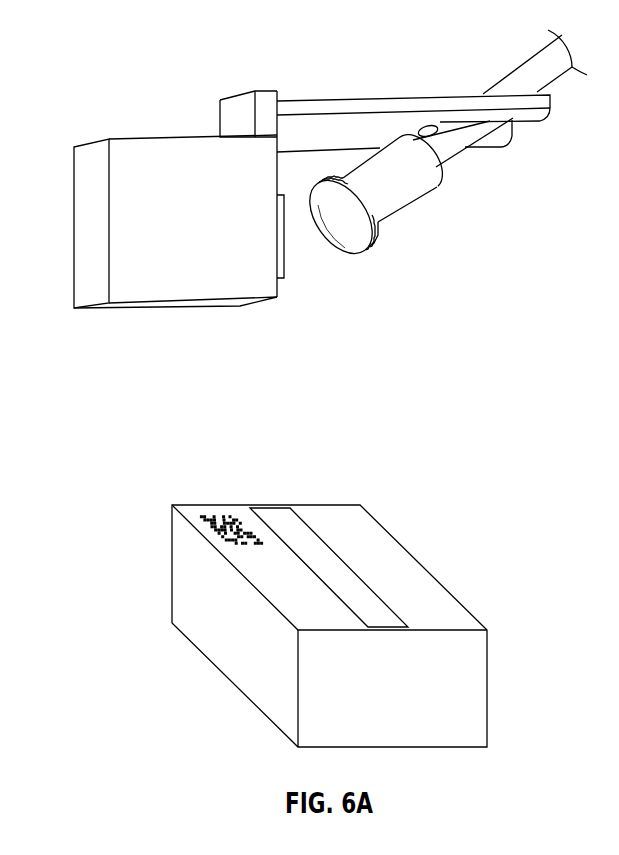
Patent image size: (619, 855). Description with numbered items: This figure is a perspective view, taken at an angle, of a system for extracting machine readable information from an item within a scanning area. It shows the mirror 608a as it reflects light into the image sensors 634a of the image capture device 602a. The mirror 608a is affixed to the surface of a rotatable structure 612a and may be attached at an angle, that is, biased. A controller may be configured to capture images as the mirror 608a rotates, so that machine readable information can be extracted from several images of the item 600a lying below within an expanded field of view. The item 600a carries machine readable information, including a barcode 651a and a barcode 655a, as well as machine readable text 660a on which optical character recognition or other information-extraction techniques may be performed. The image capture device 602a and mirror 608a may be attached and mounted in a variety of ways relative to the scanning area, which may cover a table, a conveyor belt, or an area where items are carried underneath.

The image capture device 602a is at (148, 137).
The image sensors 634a is at (285, 258).
The rotatable structure 612a is at (413, 185).
The mirror 608a is at (357, 240).
The item 600a is at (373, 517).
The machine readable text 660a is at (280, 510).
The barcode 651a is at (207, 515).
The barcode 655a is at (380, 558).